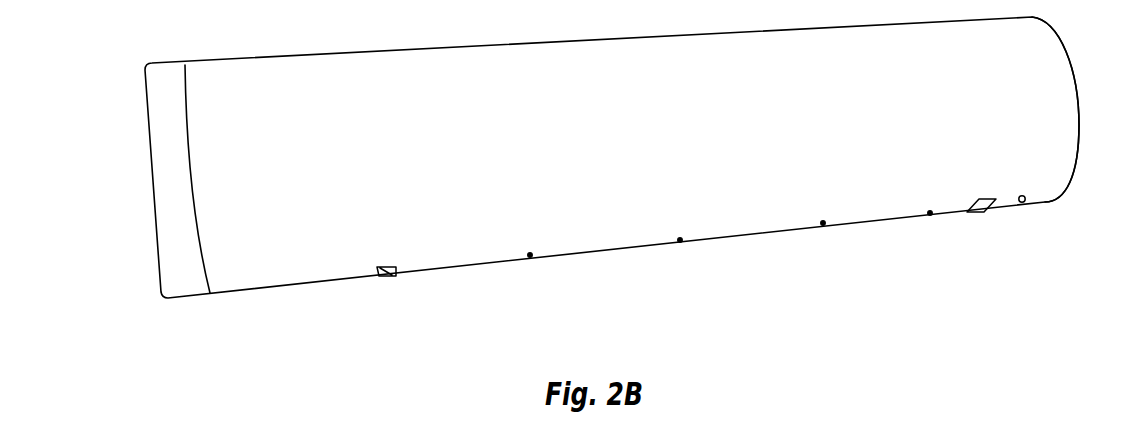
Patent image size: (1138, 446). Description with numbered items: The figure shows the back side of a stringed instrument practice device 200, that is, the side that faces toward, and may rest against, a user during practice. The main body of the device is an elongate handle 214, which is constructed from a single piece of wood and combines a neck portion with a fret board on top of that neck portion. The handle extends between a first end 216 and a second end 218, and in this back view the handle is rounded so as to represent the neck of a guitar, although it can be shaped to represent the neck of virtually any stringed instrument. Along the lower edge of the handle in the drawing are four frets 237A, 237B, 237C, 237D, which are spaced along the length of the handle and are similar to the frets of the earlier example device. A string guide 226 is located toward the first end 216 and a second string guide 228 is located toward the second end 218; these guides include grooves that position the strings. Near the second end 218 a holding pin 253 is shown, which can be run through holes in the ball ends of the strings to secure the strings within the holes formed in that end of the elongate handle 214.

The stringed instrument practice device 200 is at (113, 63).
The elongate handle 214 is at (524, 44).
The end of elongate handle 216 is at (147, 204).
The end of elongate handle 218 is at (1072, 73).
The string guide 226 is at (388, 278).
The string guide 228 is at (979, 214).
The fret 237A is at (531, 258).
The fret 237B is at (681, 243).
The fret 237C is at (824, 226).
The fret 237D is at (931, 216).
The holding pin 253 is at (1025, 204).